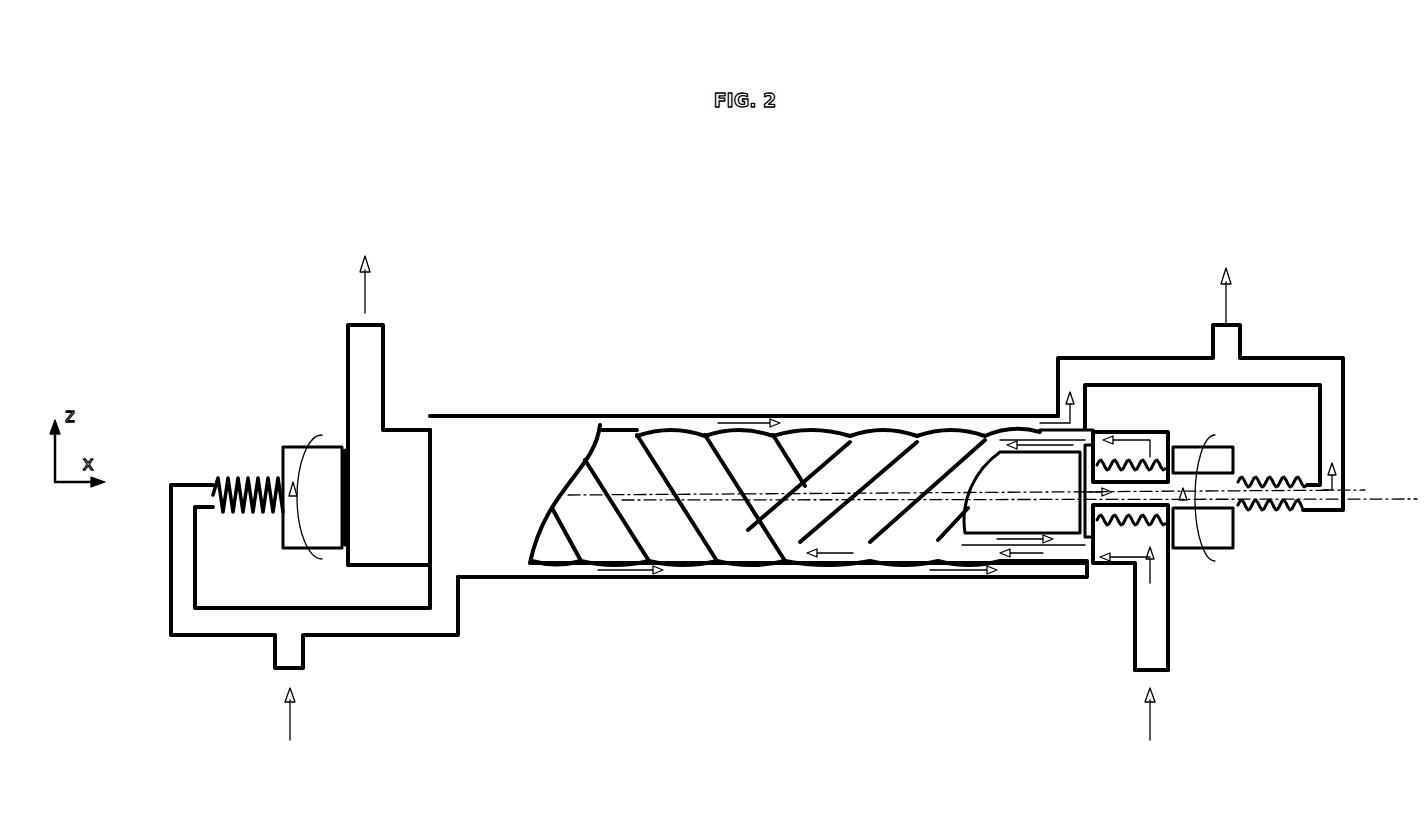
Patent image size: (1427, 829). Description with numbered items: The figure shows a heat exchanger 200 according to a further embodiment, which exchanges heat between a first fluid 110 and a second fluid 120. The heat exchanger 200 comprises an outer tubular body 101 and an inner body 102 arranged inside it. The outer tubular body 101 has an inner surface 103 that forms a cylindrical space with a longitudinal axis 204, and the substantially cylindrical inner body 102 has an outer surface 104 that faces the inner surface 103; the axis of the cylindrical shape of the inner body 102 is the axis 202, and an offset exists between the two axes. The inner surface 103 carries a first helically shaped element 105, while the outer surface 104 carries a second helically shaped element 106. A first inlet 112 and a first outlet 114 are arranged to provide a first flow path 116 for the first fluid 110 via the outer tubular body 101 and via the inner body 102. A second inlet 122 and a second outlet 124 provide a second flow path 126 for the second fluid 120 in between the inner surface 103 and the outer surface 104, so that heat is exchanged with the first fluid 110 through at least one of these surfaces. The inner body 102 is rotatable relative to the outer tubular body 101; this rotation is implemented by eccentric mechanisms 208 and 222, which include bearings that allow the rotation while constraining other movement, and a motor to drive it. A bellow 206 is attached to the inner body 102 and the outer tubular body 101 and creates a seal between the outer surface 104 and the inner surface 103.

The heat exchanger 200 is at (582, 306).
The outer tubular body 101 is at (487, 443).
The inner body 102 is at (970, 477).
The inner surface 103 is at (878, 440).
The outer surface 104 is at (937, 455).
The first helically shaped element 105 is at (697, 513).
The second helically shaped element 106 is at (840, 518).
The first fluid 110 is at (967, 533).
The first inlet 112 is at (293, 660).
The first outlet 114 is at (1230, 342).
The first flow path 116 is at (762, 430).
The second fluid 120 is at (1127, 563).
The second inlet 122 is at (1152, 650).
The second outlet 124 is at (358, 340).
The second flow path 126 is at (833, 552).
The axis 202 is at (1365, 485).
The longitudinal axis 204 is at (1417, 498).
The bellow 206 is at (1132, 527).
The eccentric mechanism 208 is at (1215, 533).
The eccentric mechanism 222 is at (315, 477).